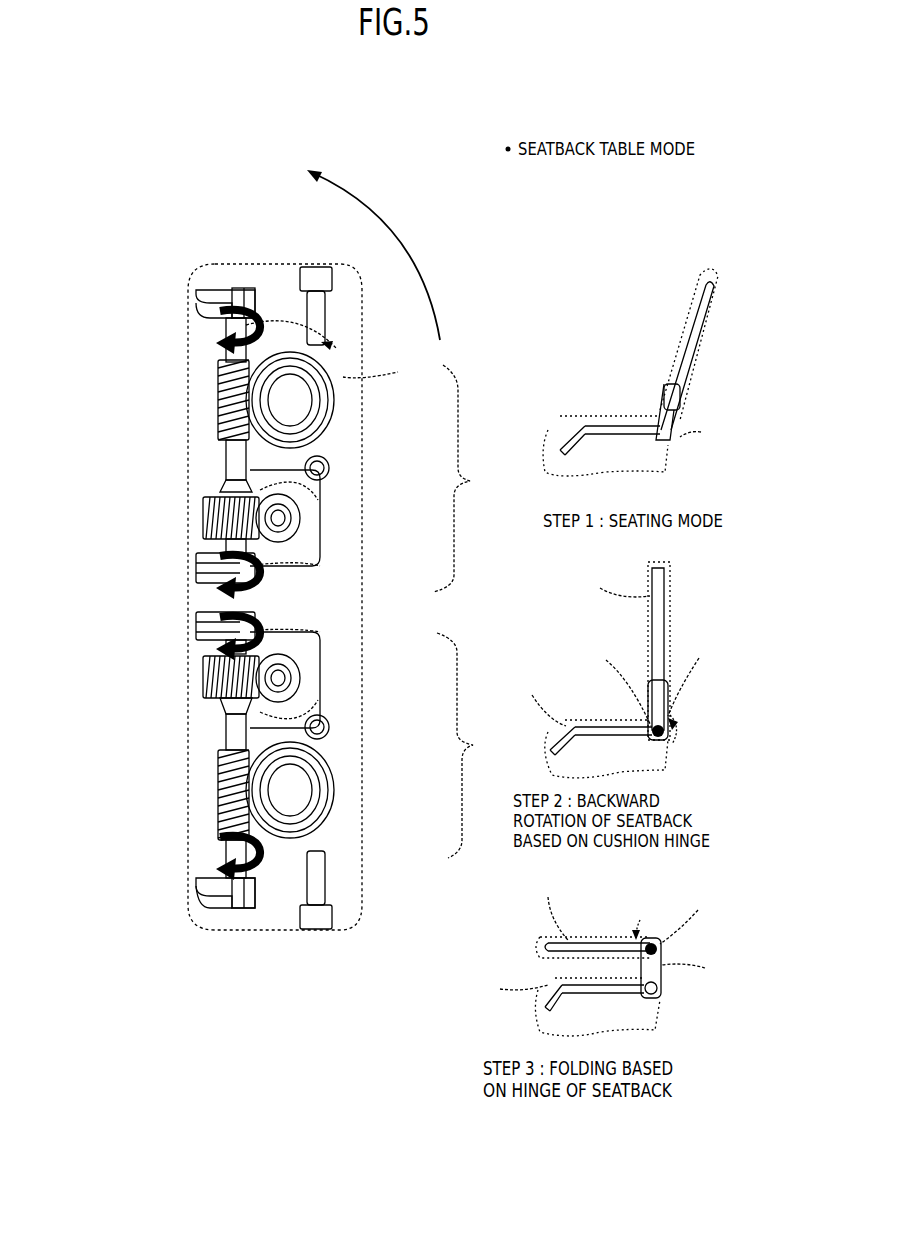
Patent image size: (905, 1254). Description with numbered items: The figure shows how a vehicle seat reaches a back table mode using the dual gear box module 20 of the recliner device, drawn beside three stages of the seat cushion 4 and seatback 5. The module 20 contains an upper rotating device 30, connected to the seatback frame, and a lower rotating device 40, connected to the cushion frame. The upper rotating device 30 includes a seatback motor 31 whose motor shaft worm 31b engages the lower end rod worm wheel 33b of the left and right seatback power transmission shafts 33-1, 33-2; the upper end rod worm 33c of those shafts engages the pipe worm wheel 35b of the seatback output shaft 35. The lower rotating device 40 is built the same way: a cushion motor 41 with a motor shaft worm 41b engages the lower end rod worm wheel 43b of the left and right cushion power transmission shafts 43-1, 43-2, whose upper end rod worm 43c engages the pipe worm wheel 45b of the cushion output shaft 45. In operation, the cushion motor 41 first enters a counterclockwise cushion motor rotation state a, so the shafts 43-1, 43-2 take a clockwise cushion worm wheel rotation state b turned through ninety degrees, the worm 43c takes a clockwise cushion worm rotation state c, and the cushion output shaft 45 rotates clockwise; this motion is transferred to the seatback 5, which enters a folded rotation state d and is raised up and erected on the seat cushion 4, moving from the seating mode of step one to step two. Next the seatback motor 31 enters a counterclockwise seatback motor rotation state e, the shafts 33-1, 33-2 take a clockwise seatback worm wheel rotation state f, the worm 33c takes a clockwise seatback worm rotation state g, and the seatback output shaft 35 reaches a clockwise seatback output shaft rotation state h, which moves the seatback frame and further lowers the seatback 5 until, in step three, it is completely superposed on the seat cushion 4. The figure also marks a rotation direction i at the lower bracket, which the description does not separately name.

The dual gear box module 20 is at (224, 212).
The upper rotating device 30 is at (466, 478).
The lower rotating device 40 is at (468, 745).
The seatback motor 31 is at (338, 564).
The cushion motor 41 is at (338, 617).
The left seatback power transmission shaft 33-1 is at (176, 286).
The right seatback power transmission shaft 33-2 is at (207, 268).
The left cushion power transmission shaft 43-1 is at (202, 915).
The right cushion power transmission shaft 43-2 is at (216, 896).
The lower end rod worm wheel 33b is at (228, 520).
The upper end rod worm 33c is at (218, 400).
The lower end rod worm wheel 43b is at (210, 664).
The upper end rod worm 43c is at (220, 785).
The right motor shaft worm 31b is at (215, 500).
The right motor shaft worm 41b is at (235, 702).
The seatback output shaft 35 is at (291, 355).
The cushion output shaft 45 is at (340, 777).
The right pipe worm wheel 35b is at (225, 375).
The right pipe worm wheel 45b is at (262, 915).
The seat cushion 4 is at (600, 424).
The seatback 5 is at (692, 332).
The counterclockwise cushion motor rotation state a is at (684, 729).
The clockwise cushion worm wheel rotation state b is at (198, 619).
The clockwise cushion worm rotation state c is at (212, 840).
The folded rotation state d is at (373, 255).
The counterclockwise seatback motor rotation state e is at (338, 519).
The clockwise seatback worm wheel rotation state f is at (205, 555).
The clockwise seatback worm rotation state g is at (196, 291).
The clockwise seatback output shaft rotation state h is at (381, 365).
The rotation direction i is at (340, 671).